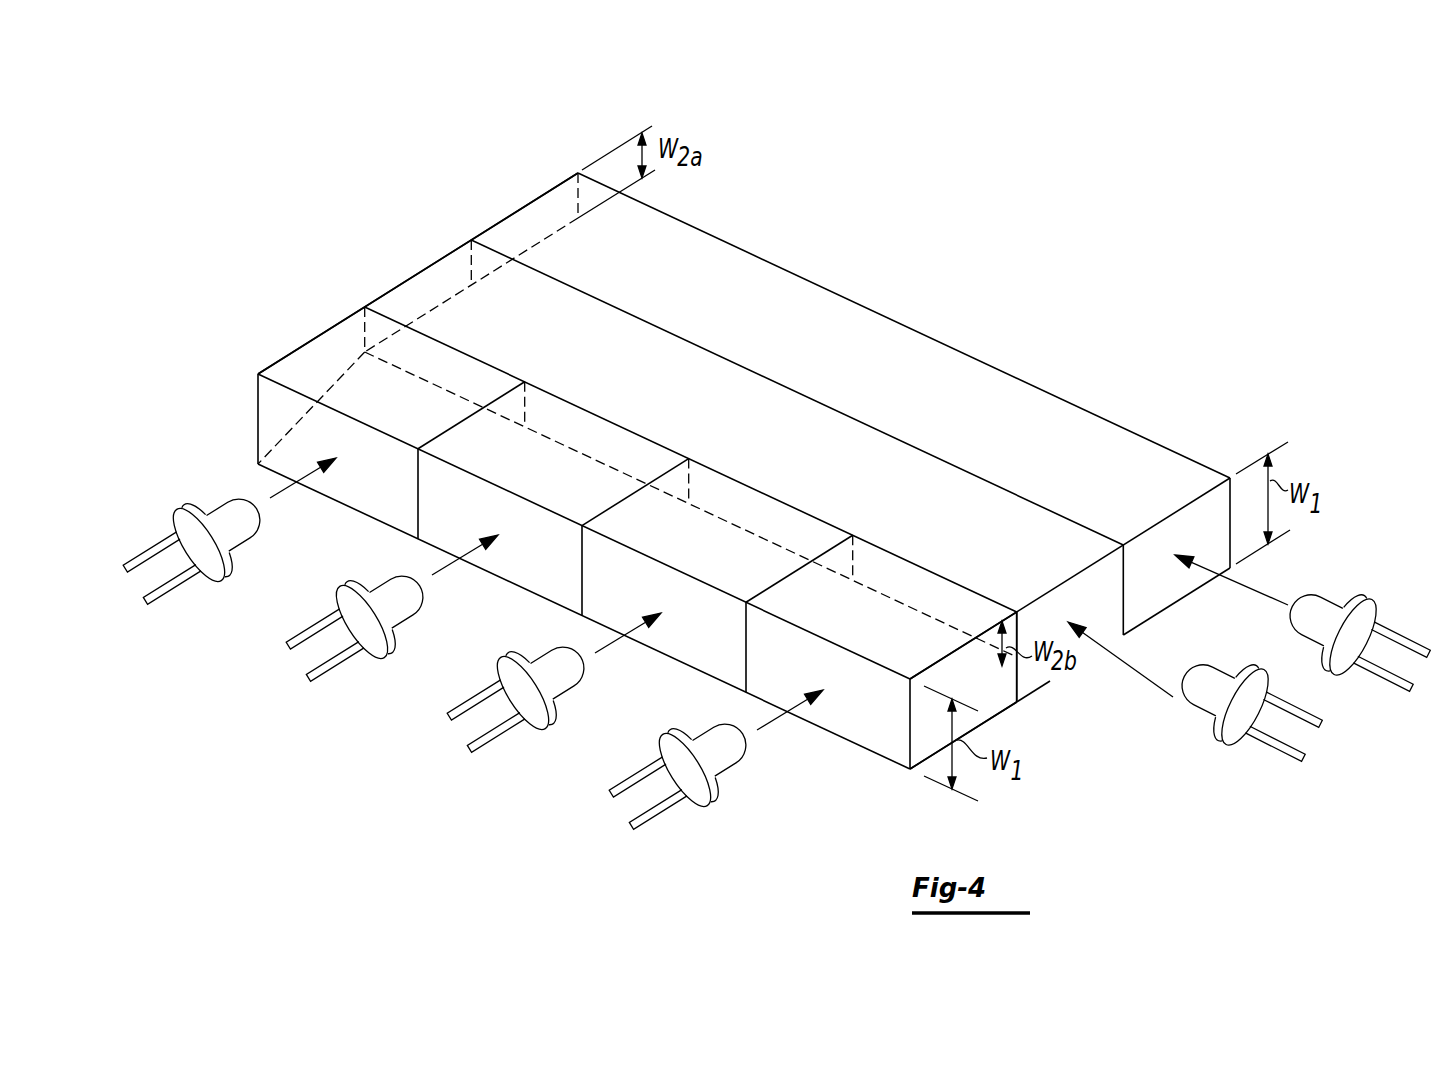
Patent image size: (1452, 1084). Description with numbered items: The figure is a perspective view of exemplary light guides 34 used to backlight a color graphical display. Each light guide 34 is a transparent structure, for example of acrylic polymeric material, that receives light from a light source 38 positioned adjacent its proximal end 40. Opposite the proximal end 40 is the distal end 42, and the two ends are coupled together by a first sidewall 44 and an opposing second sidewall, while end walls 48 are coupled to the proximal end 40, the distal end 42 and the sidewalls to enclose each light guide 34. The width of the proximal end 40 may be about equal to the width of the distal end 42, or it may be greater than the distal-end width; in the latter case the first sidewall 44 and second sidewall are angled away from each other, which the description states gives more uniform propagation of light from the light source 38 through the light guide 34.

The light guide 34 is at (373, 408).
The light source 38 is at (205, 582).
The proximal end 40 is at (375, 513).
The distal end 42 is at (523, 220).
The first sidewall 44 is at (290, 375).
The end wall 48 is at (758, 255).